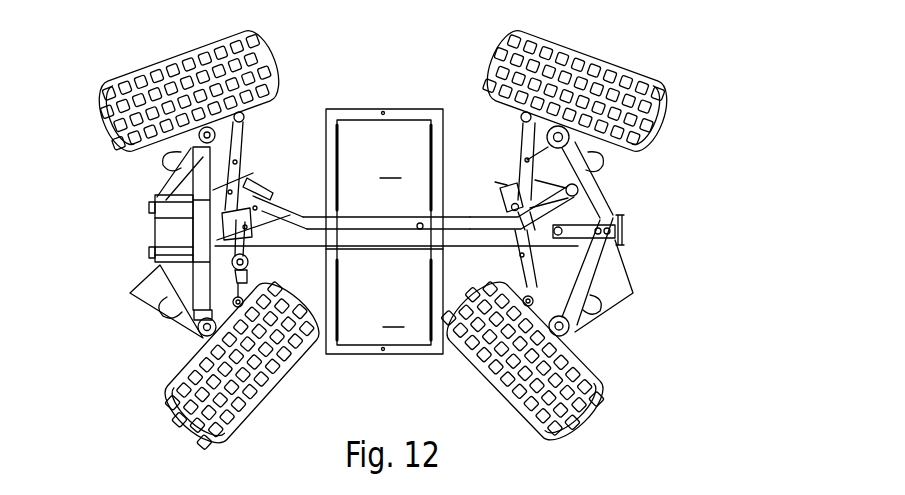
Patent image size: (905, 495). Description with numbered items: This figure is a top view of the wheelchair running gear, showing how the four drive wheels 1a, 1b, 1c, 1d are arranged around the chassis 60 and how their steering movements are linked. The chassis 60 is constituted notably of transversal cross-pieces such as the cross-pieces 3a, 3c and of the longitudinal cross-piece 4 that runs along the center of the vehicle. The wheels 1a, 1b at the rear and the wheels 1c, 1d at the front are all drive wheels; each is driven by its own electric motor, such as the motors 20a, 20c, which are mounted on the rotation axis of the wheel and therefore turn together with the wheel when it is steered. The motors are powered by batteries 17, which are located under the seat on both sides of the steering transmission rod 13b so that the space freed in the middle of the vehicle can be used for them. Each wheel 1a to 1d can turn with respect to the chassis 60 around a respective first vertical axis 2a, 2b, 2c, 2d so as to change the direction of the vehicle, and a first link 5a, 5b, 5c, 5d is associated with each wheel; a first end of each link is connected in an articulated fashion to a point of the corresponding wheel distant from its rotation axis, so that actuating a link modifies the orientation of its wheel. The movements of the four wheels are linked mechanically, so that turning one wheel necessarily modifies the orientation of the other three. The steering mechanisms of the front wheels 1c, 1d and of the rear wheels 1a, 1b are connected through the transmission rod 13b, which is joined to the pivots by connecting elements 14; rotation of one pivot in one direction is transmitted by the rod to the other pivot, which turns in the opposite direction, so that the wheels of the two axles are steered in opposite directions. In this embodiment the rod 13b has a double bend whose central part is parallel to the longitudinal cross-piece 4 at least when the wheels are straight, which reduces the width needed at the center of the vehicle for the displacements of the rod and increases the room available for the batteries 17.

The wheel 1a is at (603, 412).
The wheel 1b is at (653, 100).
The wheel 1c is at (177, 428).
The wheel 1d is at (118, 92).
The first vertical axis 2a is at (566, 327).
The first vertical axis 2b is at (580, 133).
The first vertical axis 2c is at (205, 325).
The first vertical axis 2d is at (183, 143).
The transversal cross-piece 3a is at (602, 265).
The transversal cross-piece 3c is at (183, 272).
The longitudinal cross-piece 4 is at (480, 215).
The first link 5a is at (518, 250).
The first link 5b is at (528, 150).
The first link 5c is at (250, 263).
The first link 5d is at (240, 150).
The transmission rod 13b is at (343, 223).
The connecting element 14 is at (258, 200).
The battery 17 is at (384, 231).
The electric motor 20a is at (633, 293).
The electric motor 20c is at (155, 292).
The chassis 60 is at (448, 247).